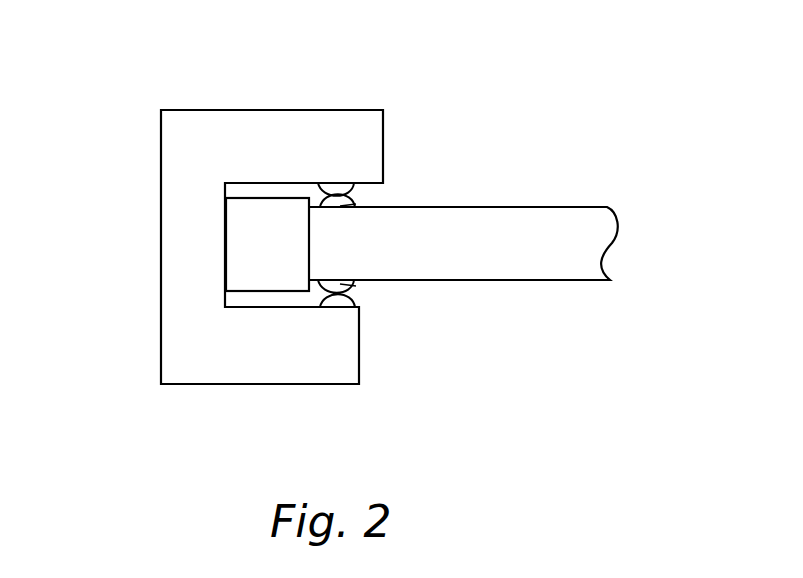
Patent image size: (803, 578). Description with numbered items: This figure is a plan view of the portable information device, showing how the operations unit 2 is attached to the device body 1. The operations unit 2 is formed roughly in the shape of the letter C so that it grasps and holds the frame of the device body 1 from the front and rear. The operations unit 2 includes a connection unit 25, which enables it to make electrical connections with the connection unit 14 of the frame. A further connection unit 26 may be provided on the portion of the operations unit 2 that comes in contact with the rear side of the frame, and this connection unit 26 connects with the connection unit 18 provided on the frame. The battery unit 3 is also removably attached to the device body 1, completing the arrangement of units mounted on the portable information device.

The device body 1 is at (545, 207).
The operations unit 2 is at (248, 395).
The battery unit 3 is at (245, 255).
The connection unit 14 is at (345, 207).
The connection unit 18 is at (345, 287).
The connection unit 25 is at (338, 185).
The connection unit 26 is at (357, 305).